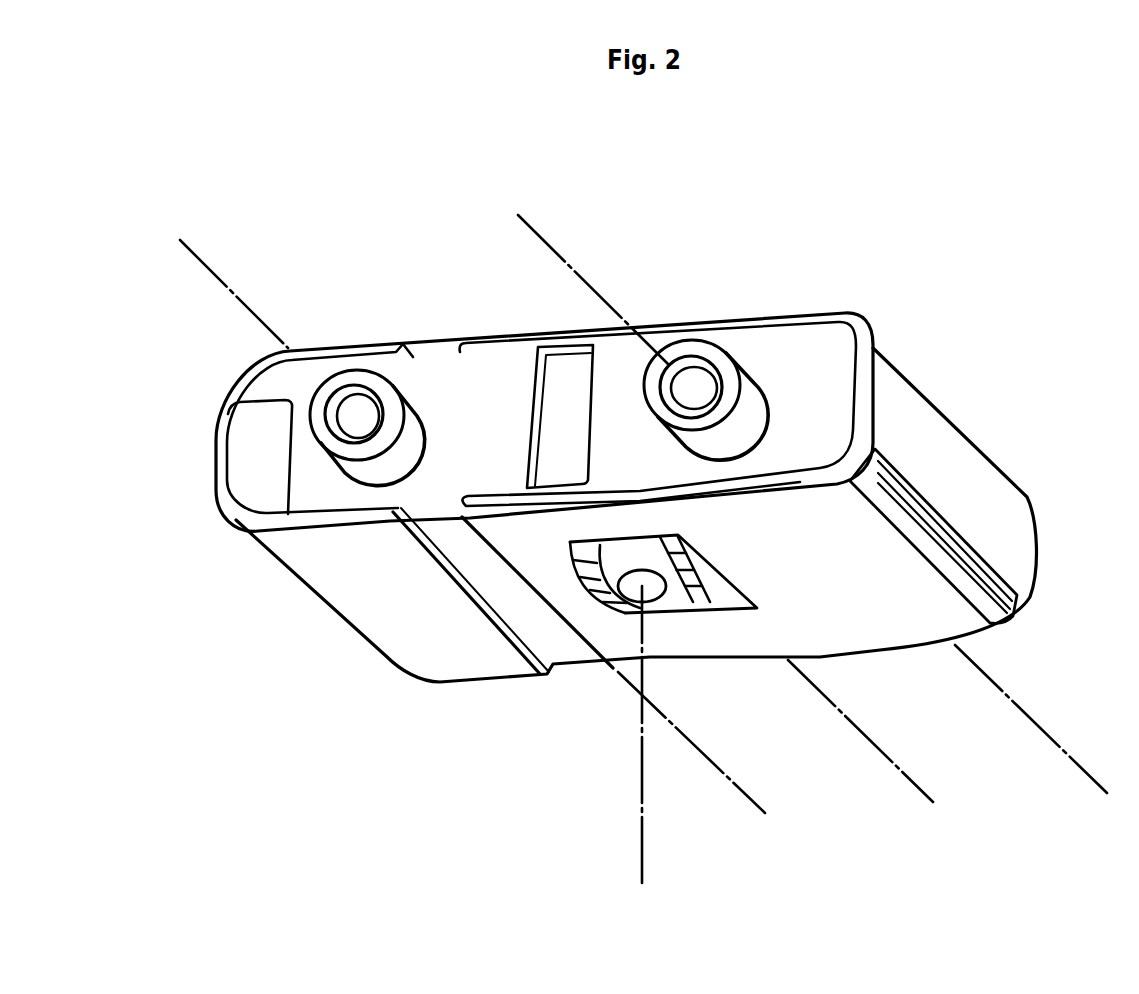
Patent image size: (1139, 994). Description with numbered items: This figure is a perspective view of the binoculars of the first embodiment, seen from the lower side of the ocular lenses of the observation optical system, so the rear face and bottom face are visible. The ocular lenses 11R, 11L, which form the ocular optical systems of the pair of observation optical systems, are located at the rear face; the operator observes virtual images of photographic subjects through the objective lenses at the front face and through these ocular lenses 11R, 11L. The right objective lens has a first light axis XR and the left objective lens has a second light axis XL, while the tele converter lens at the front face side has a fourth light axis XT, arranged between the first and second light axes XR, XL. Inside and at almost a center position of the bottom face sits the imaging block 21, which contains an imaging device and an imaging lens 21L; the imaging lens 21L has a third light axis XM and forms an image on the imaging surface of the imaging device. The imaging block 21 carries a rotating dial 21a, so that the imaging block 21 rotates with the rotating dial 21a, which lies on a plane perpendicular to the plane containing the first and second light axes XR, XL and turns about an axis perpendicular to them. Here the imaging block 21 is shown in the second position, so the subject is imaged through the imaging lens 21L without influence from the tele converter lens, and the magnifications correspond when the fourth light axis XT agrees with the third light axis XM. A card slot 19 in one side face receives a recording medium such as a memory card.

The ocular lens 11L is at (350, 410).
The ocular lens 11R is at (716, 358).
The card slot 19 is at (948, 512).
The imaging block 21 is at (630, 534).
The rotating dial 21a is at (692, 560).
The imaging lens 21L is at (655, 590).
The second light axis XL is at (483, 545).
The fourth light axis XT is at (873, 751).
The first light axis XR is at (820, 522).
The third light axis XM is at (636, 757).